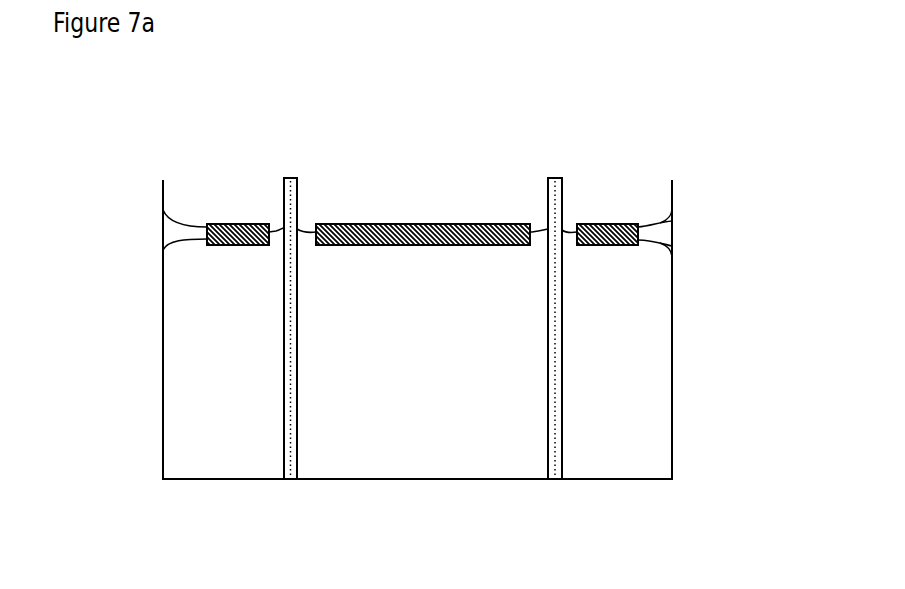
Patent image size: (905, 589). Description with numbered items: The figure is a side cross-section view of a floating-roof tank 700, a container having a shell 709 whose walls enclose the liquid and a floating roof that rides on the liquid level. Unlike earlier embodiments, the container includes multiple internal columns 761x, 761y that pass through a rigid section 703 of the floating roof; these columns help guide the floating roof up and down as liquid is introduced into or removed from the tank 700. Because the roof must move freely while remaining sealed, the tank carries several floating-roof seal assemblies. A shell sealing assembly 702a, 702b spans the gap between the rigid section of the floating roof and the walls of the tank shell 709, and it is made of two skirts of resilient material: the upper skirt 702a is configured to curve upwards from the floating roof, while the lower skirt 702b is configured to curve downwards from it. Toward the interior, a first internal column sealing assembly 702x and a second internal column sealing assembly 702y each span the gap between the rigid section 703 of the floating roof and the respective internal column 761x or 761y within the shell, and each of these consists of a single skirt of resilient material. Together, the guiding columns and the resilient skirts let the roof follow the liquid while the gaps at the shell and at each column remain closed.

The tank 700 is at (683, 508).
The upper skirt 702a is at (672, 221).
The lower skirt 702b is at (672, 246).
The first internal column sealing assembly 702x is at (276, 229).
The second internal column sealing assembly 702y is at (568, 224).
The rigid section 703 is at (413, 228).
The shell 709 is at (163, 345).
The internal column 761x is at (291, 178).
The internal column 761y is at (555, 178).